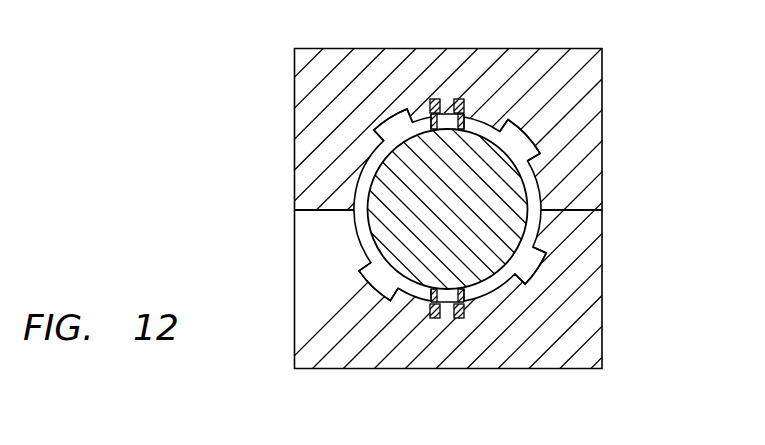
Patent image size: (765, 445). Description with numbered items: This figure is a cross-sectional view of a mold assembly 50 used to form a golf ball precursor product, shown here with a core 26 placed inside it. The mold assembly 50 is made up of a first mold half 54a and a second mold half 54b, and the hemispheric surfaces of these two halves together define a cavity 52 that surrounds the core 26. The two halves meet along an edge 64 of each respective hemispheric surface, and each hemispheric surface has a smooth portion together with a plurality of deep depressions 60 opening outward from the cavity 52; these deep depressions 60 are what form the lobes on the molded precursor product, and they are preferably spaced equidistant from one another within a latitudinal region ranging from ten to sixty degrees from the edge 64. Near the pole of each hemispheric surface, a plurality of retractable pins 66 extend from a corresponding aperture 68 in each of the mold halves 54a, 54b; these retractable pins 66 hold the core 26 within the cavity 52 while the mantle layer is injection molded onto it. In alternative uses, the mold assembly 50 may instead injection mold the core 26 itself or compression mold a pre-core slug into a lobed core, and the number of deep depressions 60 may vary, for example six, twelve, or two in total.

The mold assembly 50 is at (250, 125).
The first mold half 54a is at (547, 60).
The second mold half 54b is at (567, 348).
The edge of hemispheric surface 64 is at (587, 213).
The cavity 52 is at (525, 172).
The deep depressions 60 is at (522, 128).
The retractable pins 66 is at (429, 113).
The aperture 68 is at (460, 98).
The core 26 is at (522, 189).